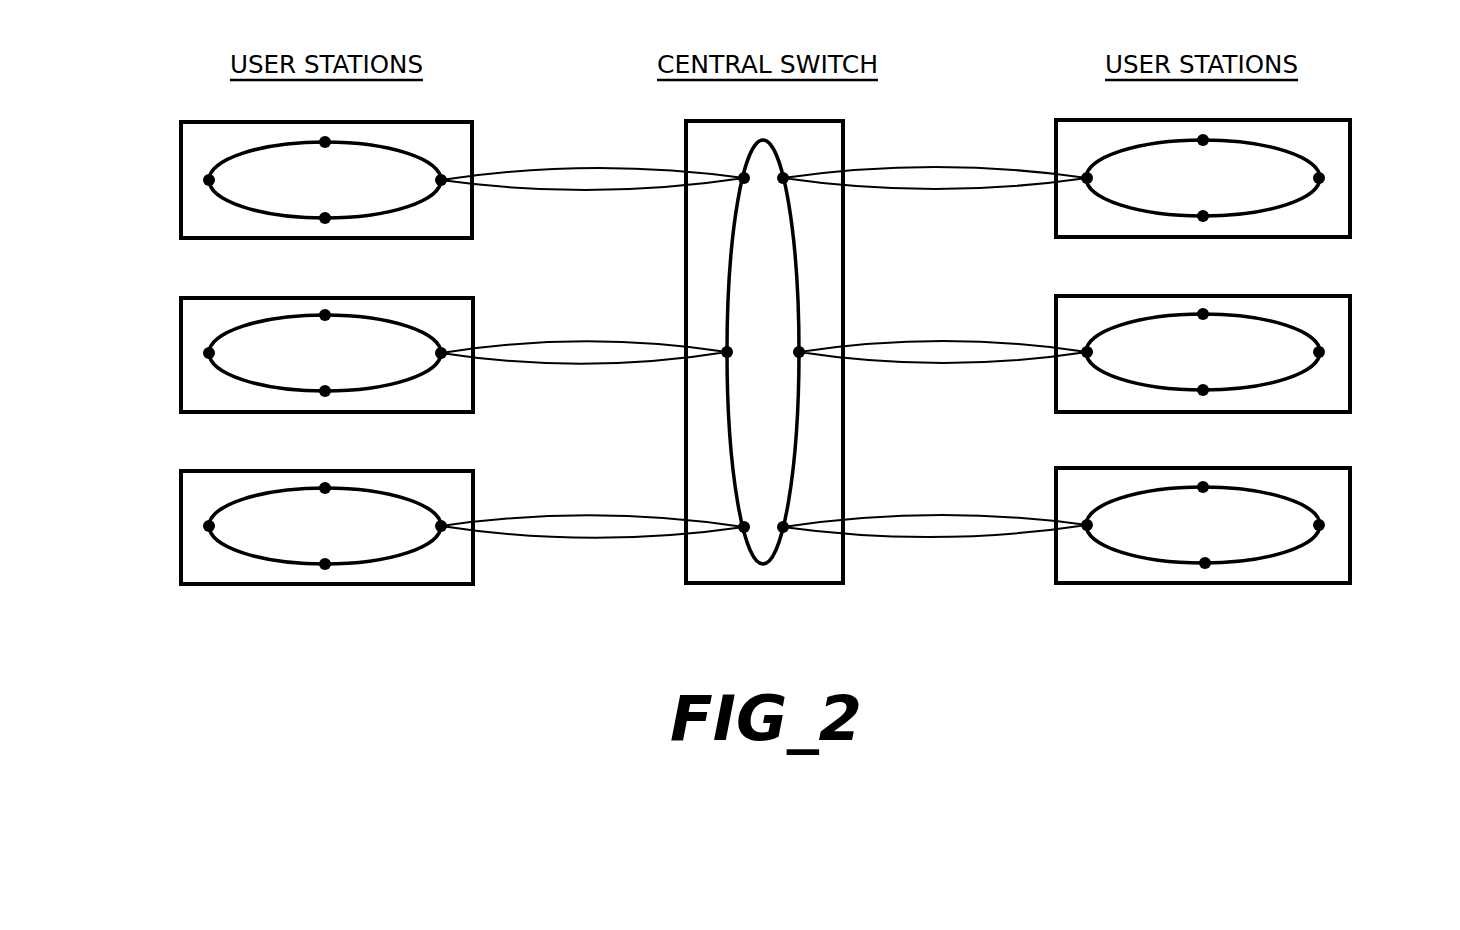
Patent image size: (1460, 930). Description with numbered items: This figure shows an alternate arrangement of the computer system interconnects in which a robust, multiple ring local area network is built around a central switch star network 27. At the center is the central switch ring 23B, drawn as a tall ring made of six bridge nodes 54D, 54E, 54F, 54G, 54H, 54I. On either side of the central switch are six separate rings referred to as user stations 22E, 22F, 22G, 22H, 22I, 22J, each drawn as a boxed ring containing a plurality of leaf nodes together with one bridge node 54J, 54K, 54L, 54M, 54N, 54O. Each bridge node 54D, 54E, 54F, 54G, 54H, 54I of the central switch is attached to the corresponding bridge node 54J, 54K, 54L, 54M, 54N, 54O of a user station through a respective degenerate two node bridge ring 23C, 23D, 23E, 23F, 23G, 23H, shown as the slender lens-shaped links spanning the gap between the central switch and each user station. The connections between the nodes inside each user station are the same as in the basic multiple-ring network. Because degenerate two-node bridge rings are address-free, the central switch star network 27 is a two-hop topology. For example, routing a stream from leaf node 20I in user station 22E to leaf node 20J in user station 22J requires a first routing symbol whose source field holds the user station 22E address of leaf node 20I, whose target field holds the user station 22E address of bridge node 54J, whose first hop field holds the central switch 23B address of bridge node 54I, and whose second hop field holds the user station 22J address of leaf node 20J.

The central switch star network 27 is at (701, 651).
The central switch ring 23B is at (795, 595).
The degenerate two node bridge ring 23C is at (630, 558).
The degenerate two node bridge ring 23D is at (630, 387).
The degenerate two node bridge ring 23E is at (630, 203).
The degenerate two node bridge ring 23F is at (910, 203).
The degenerate two node bridge ring 23G is at (910, 381).
The degenerate two node bridge ring 23H is at (910, 551).
The user station ring 22E is at (172, 552).
The user station ring 22F is at (172, 378).
The user station ring 22G is at (172, 207).
The user station ring 22H is at (1359, 204).
The user station ring 22I is at (1359, 377).
The user station ring 22J is at (1359, 548).
The leaf node 20I is at (325, 566).
The leaf node 20J is at (1205, 565).
The bridge node 54D is at (742, 525).
The bridge node 54E is at (725, 350).
The bridge node 54F is at (742, 176).
The bridge node 54G is at (785, 176).
The bridge node 54H is at (801, 350).
The bridge node 54I is at (785, 525).
The bridge node 54J is at (443, 524).
The bridge node 54K is at (443, 351).
The bridge node 54L is at (443, 178).
The bridge node 54M is at (1085, 176).
The bridge node 54N is at (1085, 350).
The bridge node 54O is at (1085, 523).